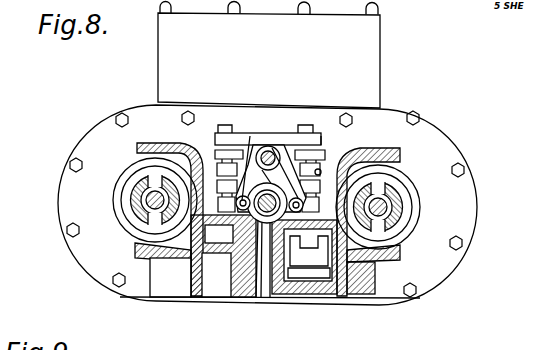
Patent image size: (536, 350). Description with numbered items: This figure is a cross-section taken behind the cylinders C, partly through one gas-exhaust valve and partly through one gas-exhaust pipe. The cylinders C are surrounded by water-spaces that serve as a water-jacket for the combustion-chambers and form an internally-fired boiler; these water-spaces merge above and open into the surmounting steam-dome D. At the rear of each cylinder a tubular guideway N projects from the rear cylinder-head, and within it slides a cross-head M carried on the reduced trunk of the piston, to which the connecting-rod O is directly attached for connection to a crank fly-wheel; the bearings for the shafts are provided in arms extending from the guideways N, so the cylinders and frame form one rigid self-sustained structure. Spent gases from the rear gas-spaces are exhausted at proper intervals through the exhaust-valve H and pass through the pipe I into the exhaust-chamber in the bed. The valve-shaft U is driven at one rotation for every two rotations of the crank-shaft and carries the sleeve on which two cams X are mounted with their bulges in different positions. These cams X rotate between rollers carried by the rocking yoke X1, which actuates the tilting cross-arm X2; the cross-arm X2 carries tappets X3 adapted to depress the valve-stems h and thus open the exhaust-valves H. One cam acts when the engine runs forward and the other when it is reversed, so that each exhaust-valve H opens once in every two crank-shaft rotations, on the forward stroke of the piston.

The cylinder C is at (266, 205).
The steam-dome D is at (269, 54).
The guideway N is at (140, 150).
The cross-head M is at (145, 161).
The connecting-rod O is at (150, 199).
The pipe I is at (223, 256).
The exhaust-valve H is at (312, 283).
The valve-shaft U is at (264, 300).
The cam X is at (262, 214).
The rocking yoke X1 is at (250, 134).
The tilting cross-arm X2 is at (286, 152).
The tappet X3 is at (326, 148).
The valve-stem h is at (321, 171).